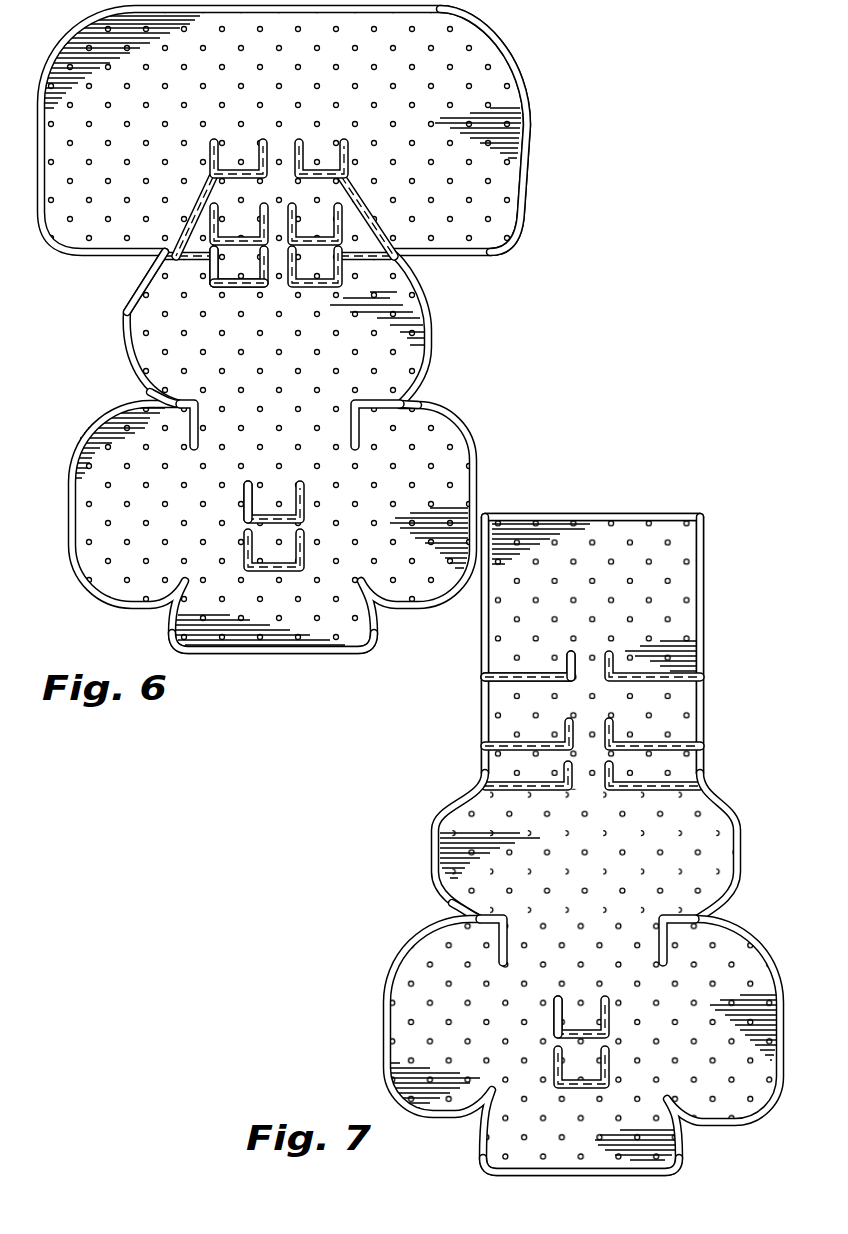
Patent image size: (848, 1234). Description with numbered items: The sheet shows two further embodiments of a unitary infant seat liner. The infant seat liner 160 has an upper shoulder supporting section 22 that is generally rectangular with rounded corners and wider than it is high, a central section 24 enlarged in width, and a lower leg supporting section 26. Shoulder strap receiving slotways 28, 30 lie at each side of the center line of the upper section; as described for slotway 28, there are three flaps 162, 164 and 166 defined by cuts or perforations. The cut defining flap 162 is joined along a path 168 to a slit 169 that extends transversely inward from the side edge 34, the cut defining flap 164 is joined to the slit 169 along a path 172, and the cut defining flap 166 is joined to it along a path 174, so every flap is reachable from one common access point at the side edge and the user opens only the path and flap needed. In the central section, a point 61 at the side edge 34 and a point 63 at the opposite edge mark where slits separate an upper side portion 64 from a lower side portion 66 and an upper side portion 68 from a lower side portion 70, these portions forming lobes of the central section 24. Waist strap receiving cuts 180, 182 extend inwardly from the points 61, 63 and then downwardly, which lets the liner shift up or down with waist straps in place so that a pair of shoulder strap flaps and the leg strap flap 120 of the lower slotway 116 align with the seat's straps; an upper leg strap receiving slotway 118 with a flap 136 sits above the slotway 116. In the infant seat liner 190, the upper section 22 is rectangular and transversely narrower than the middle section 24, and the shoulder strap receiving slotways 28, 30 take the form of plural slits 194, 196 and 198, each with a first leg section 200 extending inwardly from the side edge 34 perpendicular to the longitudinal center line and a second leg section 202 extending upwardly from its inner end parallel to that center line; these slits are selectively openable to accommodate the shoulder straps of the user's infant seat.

In FIG. 6, the infant seat liner 160 is at (524, 70).
In FIG. 6, the flap 162 is at (228, 160).
In FIG. 6, the flap 164 is at (242, 228).
In FIG. 6, the flap 166 is at (262, 283).
In FIG. 6, the path 168 is at (203, 192).
In FIG. 6, the slit 169 is at (205, 258).
In FIG. 6, the path 172 is at (213, 268).
In FIG. 6, the path 174 is at (250, 275).
In FIG. 6, the upper shoulder supporting section 22 is at (510, 187).
In FIG. 7, the upper shoulder supporting section 22 is at (683, 600).
In FIG. 6, the central section 24 is at (410, 320).
In FIG. 7, the central section 24 is at (445, 892).
In FIG. 6, the lower leg supporting section 26 is at (445, 455).
In FIG. 7, the lower leg supporting section 26 is at (560, 1135).
In FIG. 6, the shoulder strap receiving slotway 28 is at (163, 207).
In FIG. 7, the shoulder strap receiving slotway 28 is at (470, 748).
In FIG. 6, the shoulder strap receiving slotway 30 is at (385, 218).
In FIG. 7, the shoulder strap receiving slotway 30 is at (712, 716).
In FIG. 6, the side edge 34 is at (135, 297).
In FIG. 7, the side edge 34 is at (483, 652).
In FIG. 6, the point 61 is at (175, 400).
In FIG. 7, the point 61 is at (445, 905).
In FIG. 6, the point 63 is at (405, 400).
In FIG. 7, the point 63 is at (718, 908).
In FIG. 6, the upper side portion 64 is at (182, 352).
In FIG. 6, the lower side portion 66 is at (140, 501).
In FIG. 6, the upper side portion 68 is at (396, 389).
In FIG. 6, the lower side portion 70 is at (428, 482).
In FIG. 6, the waist strap receiving cut 180 is at (192, 403).
In FIG. 7, the waist strap receiving cut 180 is at (506, 919).
In FIG. 6, the waist strap receiving cut 182 is at (368, 400).
In FIG. 7, the waist strap receiving cut 182 is at (660, 950).
In FIG. 6, the leg strap receiving slotway 118 is at (238, 516).
In FIG. 7, the leg strap receiving slotway 118 is at (548, 1018).
In FIG. 6, the flap 120 is at (283, 540).
In FIG. 7, the flap 120 is at (595, 1062).
In FIG. 6, the flap 136 is at (283, 490).
In FIG. 7, the flap 136 is at (595, 1010).
In FIG. 6, the leg strap receiving slotway 116 is at (255, 578).
In FIG. 7, the leg strap receiving slotway 116 is at (545, 1093).
In FIG. 7, the infant seat liner 190 is at (618, 500).
In FIG. 7, the shoulder strap receiving slit 194 is at (515, 672).
In FIG. 7, the shoulder strap receiving slit 196 is at (527, 740).
In FIG. 7, the shoulder strap receiving slit 198 is at (537, 783).
In FIG. 7, the first leg section 200 is at (537, 676).
In FIG. 7, the second leg section 202 is at (568, 658).